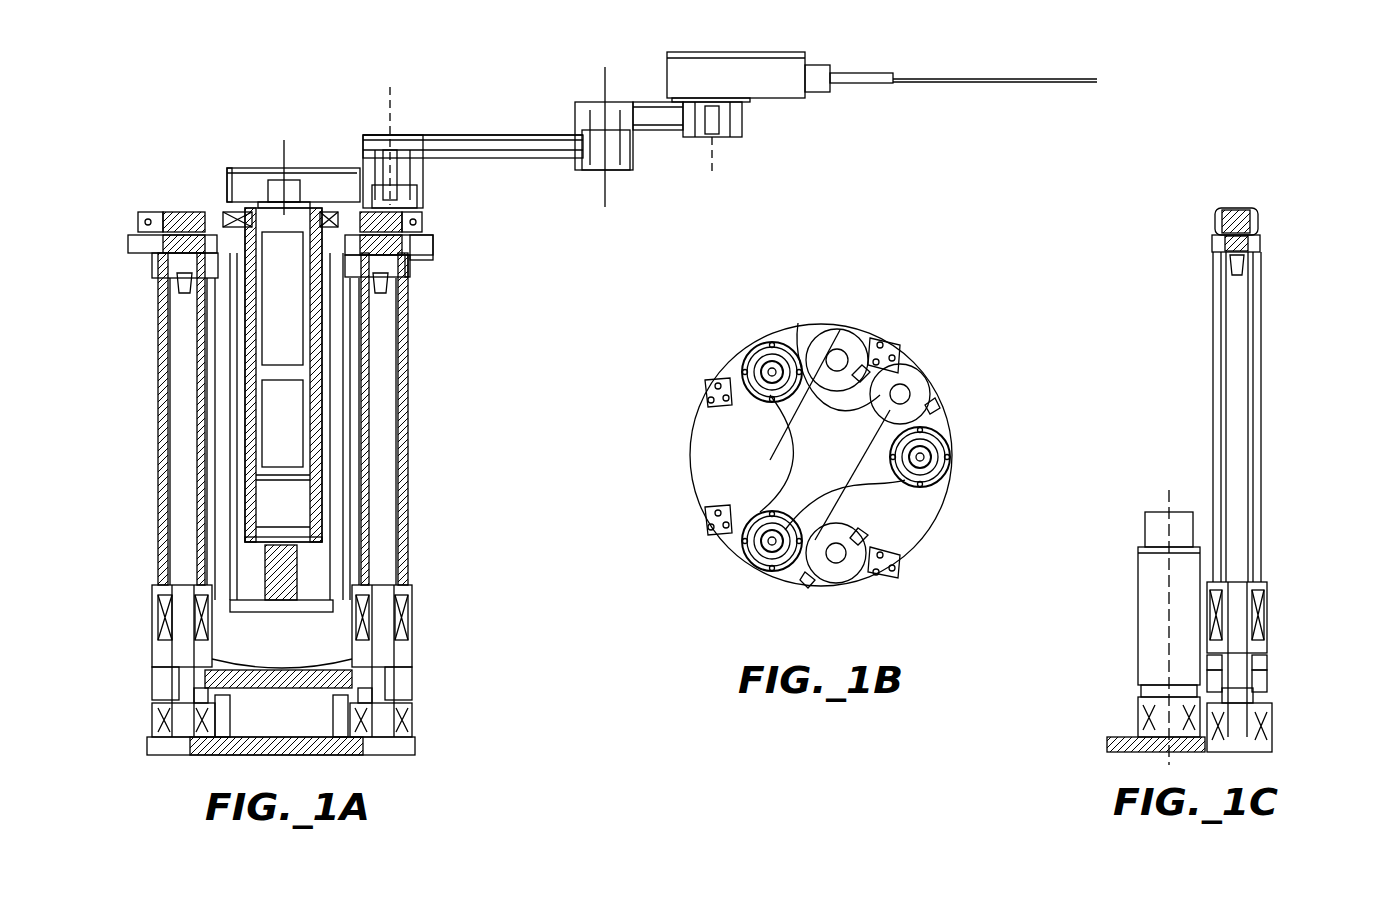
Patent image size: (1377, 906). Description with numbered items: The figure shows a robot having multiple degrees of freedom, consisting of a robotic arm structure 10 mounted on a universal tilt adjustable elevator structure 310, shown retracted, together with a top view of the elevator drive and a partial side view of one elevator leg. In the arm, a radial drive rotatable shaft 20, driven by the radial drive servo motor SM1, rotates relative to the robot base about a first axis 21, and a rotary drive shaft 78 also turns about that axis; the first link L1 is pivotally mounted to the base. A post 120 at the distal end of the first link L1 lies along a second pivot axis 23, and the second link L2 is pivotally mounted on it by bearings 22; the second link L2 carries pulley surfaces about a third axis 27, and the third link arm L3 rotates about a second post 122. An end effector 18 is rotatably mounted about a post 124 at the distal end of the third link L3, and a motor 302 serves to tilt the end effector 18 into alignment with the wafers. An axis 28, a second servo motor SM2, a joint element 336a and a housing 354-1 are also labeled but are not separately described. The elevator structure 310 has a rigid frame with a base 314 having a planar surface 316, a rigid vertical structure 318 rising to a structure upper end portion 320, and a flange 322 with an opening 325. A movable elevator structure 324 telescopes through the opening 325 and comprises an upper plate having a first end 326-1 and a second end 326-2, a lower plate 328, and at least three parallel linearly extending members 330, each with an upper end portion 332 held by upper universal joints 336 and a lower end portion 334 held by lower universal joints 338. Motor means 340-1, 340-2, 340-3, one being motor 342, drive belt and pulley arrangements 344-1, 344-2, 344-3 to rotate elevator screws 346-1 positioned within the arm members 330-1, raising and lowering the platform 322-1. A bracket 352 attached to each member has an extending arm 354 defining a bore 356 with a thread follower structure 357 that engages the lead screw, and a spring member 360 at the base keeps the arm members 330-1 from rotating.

In FIG. 1A, the robotic arm structure 10 is at (516, 95).
In FIG. 1A, the end effector 18 is at (935, 79).
In FIG. 1A, the radial drive rotatable shaft 20 is at (282, 195).
In FIG. 1A, the first axis 21 is at (284, 150).
In FIG. 1A, the bearings 22 is at (395, 172).
In FIG. 1A, the second pivot axis 23 is at (392, 95).
In FIG. 1A, the third axis 27 is at (605, 200).
In FIG. 1A, the third axis 28 is at (712, 160).
In FIG. 1A, the rotary drive shaft 78 is at (255, 195).
In FIG. 1A, the post 120 is at (400, 196).
In FIG. 1A, the second post 122 is at (620, 172).
In FIG. 1A, the post 124 is at (742, 125).
In FIG. 1A, the motor 302 is at (690, 52).
In FIG. 1A, the elevator structure 310 is at (415, 676).
In FIG. 1A, the base 314 is at (420, 740).
In FIG. 1B, the base 314 is at (935, 520).
In FIG. 1A, the planar surface 316 is at (265, 737).
In FIG. 1A, the rigid vertical structure 318 is at (158, 400).
In FIG. 1A, the structure upper end portion 320 is at (424, 275).
In FIG. 1A, the flange 322 is at (420, 258).
In FIG. 1A, the platform 322-1 is at (436, 232).
In FIG. 1A, the movable elevator structure 324 is at (430, 262).
In FIG. 1C, the opening 325 is at (1262, 232).
In FIG. 1A, the first end 326-1 is at (136, 214).
In FIG. 1A, the second end 326-2 is at (427, 212).
In FIG. 1A, the lower plate 328 is at (352, 674).
In FIG. 1A, the linearly extending members 330 is at (158, 478).
In FIG. 1A, the arm members 330-1 is at (385, 420).
In FIG. 1C, the arm members 330-1 is at (1262, 268).
In FIG. 1A, the upper end portion 332 is at (152, 245).
In FIG. 1A, the lower end portion 334 is at (150, 667).
In FIG. 1A, the upper universal joints 336 is at (172, 212).
In FIG. 1A, the cap 336a is at (405, 245).
In FIG. 1C, the cap 336a is at (1258, 215).
In FIG. 1A, the lower universal joints 338 is at (395, 695).
In FIG. 1B, the motor means 340-1 is at (848, 330).
In FIG. 1B, the motor means 340-2 is at (922, 372).
In FIG. 1B, the motor means 340-3 is at (850, 590).
In FIG. 1C, the motor 342 is at (1138, 615).
In FIG. 1B, the belt and pulley arrangement 344-1 is at (775, 342).
In FIG. 1B, the belt and pulley arrangement 344-2 is at (950, 435).
In FIG. 1B, the belt and pulley arrangement 344-3 is at (785, 580).
In FIG. 1A, the elevator screws 346-1 is at (385, 432).
In FIG. 1C, the elevator screws 346-1 is at (1242, 482).
In FIG. 1C, the bracket 352 is at (1268, 605).
In FIG. 1C, the extending arm 354 is at (1270, 675).
In FIG. 1A, the bearing housing 354-1 is at (412, 590).
In FIG. 1C, the bore 356 is at (1270, 658).
In FIG. 1C, the thread follower structure 357 is at (1262, 690).
In FIG. 1A, the spring member 360 is at (345, 640).
In FIG. 1B, the spring member 360 is at (790, 428).
In FIG. 1A, the first link L1 is at (362, 172).
In FIG. 1A, the second link L2 is at (650, 152).
In FIG. 1A, the third link arm L3 is at (660, 137).
In FIG. 1A, the Servo Motor 1 SM1 is at (270, 230).
In FIG. 1A, the second stepper motor SM2 is at (290, 490).